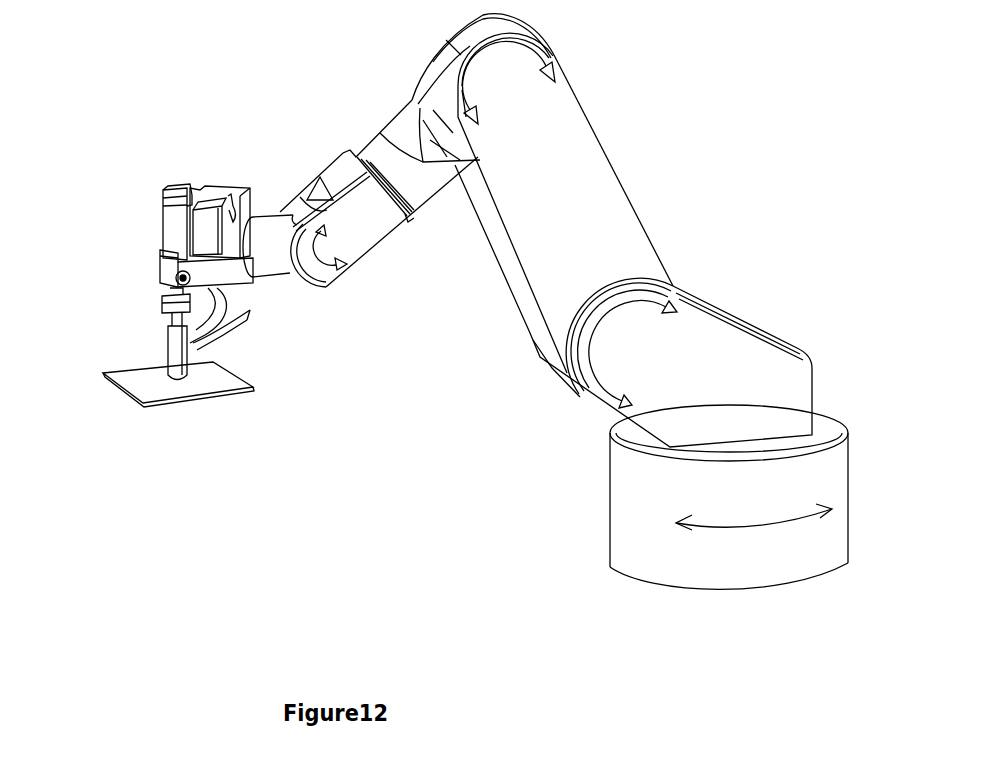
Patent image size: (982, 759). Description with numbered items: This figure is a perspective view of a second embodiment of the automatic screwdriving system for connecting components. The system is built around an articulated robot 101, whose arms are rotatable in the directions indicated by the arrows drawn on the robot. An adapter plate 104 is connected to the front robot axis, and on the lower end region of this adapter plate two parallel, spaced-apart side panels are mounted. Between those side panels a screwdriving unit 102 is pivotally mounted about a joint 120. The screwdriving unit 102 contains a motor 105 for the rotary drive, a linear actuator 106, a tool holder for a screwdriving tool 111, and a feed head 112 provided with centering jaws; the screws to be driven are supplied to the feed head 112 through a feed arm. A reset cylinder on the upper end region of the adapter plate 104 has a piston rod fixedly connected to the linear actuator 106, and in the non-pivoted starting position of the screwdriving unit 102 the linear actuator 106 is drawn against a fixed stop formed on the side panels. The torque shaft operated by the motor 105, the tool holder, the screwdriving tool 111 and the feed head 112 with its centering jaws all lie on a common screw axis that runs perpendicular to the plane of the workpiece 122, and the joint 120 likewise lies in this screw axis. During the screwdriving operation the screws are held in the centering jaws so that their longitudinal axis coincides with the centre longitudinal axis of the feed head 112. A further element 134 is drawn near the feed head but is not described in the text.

The articulated robot 101 is at (727, 303).
The screwdriving unit 102 is at (166, 172).
The adapter plate 104 is at (228, 192).
The motor 105 is at (214, 238).
The linear actuator 106 is at (163, 220).
The screwdriving tool 111 is at (172, 314).
The feed head 112 is at (167, 345).
The joint 120 is at (176, 278).
The workpiece 122 is at (123, 388).
The guide 134 is at (243, 317).